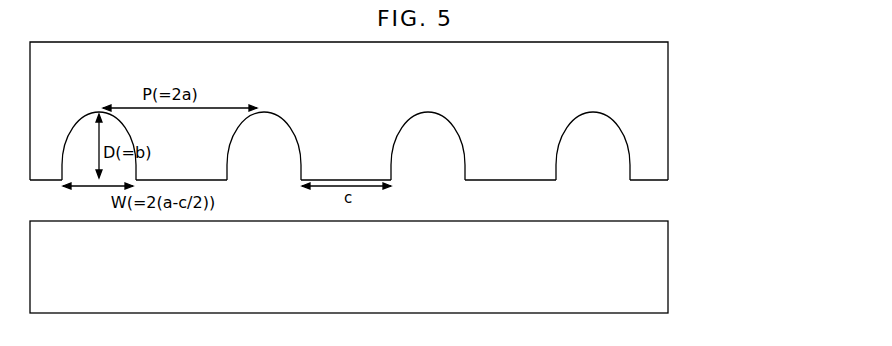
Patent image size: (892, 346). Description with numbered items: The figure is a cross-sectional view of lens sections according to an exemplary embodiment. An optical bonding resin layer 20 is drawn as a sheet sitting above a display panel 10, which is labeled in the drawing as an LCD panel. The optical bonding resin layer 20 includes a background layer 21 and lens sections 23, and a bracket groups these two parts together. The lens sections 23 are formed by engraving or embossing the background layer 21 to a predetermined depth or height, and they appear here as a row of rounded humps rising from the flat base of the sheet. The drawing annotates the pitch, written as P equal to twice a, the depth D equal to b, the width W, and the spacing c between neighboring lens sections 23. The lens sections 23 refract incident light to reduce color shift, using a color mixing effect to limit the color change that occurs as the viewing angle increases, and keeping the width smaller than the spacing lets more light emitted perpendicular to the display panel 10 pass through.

The LCD panel 10 is at (628, 288).
The optical sheet 20 is at (424, 111).
The background layer 21 is at (628, 106).
The lens sections 23 is at (628, 161).